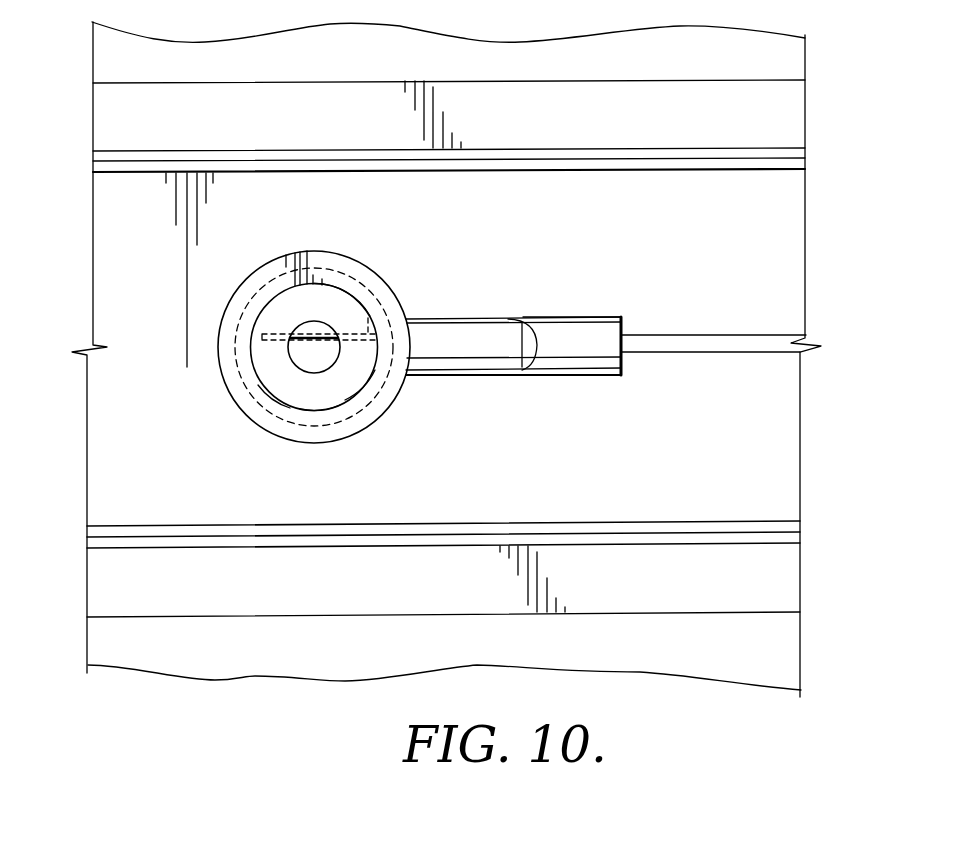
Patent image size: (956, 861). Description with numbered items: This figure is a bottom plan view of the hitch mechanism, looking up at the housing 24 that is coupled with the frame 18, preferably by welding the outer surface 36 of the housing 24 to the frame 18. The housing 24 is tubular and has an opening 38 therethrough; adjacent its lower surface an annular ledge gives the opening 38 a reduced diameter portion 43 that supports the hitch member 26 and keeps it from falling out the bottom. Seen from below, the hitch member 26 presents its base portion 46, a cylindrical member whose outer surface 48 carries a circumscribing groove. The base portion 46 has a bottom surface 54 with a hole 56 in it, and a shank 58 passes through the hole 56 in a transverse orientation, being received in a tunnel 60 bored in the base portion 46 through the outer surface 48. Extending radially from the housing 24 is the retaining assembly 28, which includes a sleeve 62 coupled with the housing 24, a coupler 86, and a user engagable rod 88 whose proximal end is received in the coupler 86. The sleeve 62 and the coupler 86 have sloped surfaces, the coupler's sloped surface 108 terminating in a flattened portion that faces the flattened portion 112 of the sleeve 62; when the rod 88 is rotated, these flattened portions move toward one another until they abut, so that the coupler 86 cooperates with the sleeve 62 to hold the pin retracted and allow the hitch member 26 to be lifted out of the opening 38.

The frame 18 is at (530, 182).
The housing 24 is at (245, 297).
The outer surface 36 is at (303, 251).
The bottom surface 54 is at (337, 293).
The tunnel 60 is at (370, 316).
The sleeve 62 is at (472, 328).
The flattened portion 112 is at (523, 328).
The coupler 86 is at (588, 325).
The user engagable rod 88 is at (745, 349).
The shank 58 is at (316, 331).
The hitch member 26 is at (253, 353).
The hole 56 is at (318, 373).
The opening 38 is at (360, 387).
The retaining assembly 28 is at (493, 367).
The sloped surface 108 is at (532, 355).
The outer surface 48 is at (247, 390).
The reduced diameter portion 43 is at (285, 402).
The base portion 46 is at (320, 405).